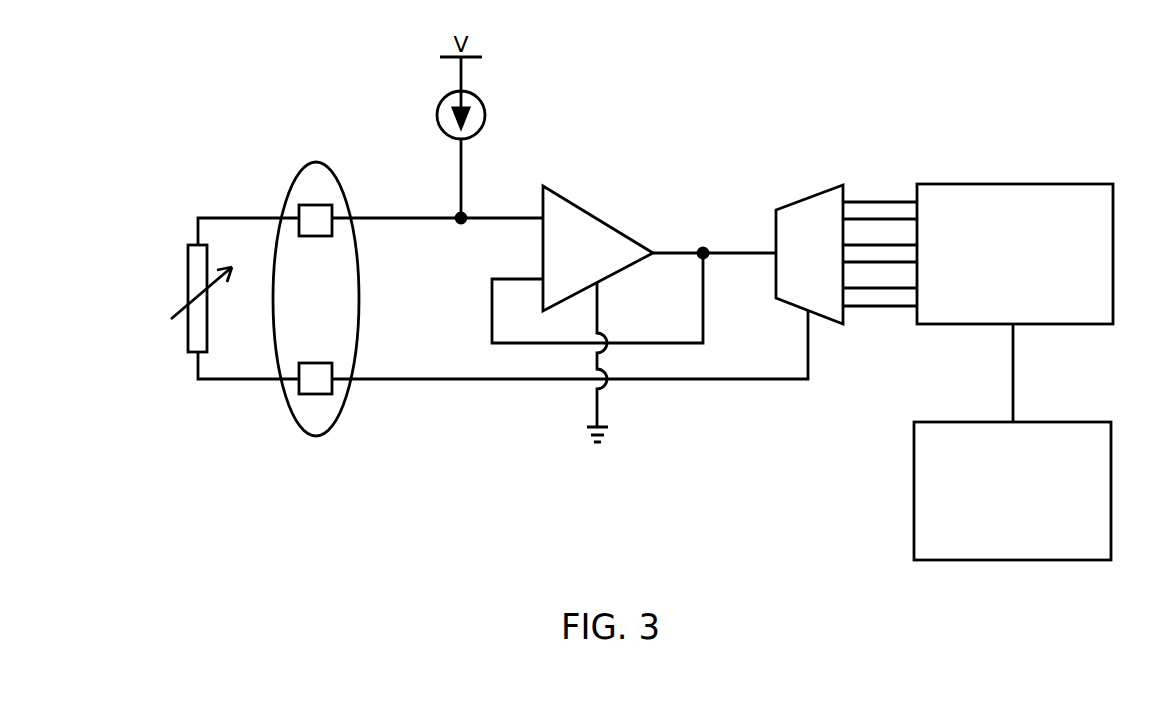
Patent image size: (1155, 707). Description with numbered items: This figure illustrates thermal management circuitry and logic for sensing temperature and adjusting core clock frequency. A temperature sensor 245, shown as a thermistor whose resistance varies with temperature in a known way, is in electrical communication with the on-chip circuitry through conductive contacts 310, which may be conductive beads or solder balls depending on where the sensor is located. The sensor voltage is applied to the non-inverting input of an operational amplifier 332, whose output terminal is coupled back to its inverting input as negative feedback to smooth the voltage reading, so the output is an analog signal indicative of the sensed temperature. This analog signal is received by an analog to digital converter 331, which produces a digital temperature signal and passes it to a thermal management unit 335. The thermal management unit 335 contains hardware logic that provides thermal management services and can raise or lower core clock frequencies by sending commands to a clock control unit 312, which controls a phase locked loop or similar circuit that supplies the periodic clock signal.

The temperature sensor 245 is at (190, 345).
The conductive contacts 310 is at (317, 436).
The operational amplifier 332 is at (604, 264).
The analog to digital converter 331 is at (788, 305).
The thermal management unit 335 is at (992, 297).
The clock control unit 312 is at (1037, 518).